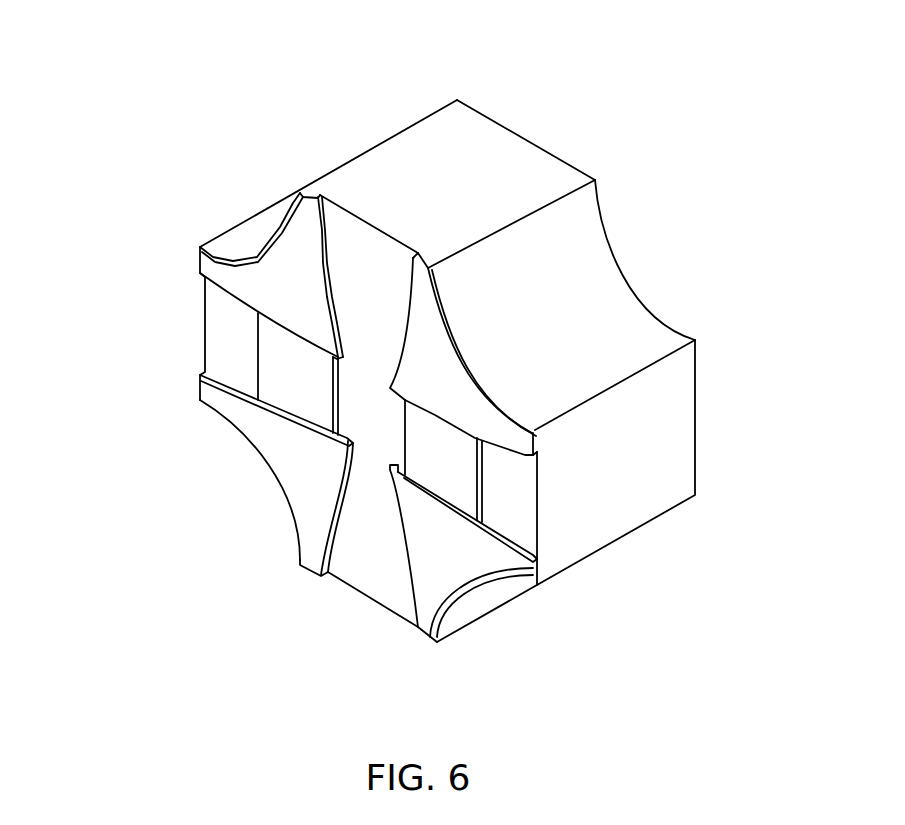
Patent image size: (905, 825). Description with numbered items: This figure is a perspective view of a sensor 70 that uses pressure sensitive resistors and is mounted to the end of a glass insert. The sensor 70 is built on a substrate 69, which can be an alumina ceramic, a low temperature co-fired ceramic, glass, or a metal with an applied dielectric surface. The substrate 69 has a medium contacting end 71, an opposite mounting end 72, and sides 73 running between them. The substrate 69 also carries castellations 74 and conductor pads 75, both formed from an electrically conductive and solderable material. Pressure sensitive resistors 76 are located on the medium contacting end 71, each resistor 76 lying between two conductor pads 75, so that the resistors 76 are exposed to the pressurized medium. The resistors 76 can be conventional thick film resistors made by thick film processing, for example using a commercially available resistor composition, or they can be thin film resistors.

The substrate 69 is at (697, 400).
The sensor 70 is at (421, 338).
The medium contacting end 71 is at (378, 570).
The mounting end 72 is at (547, 157).
The sides 73 is at (392, 163).
The castellations 74 is at (598, 289).
The conductor pads 75 is at (280, 457).
The pressure sensitive resistors 76 is at (283, 367).